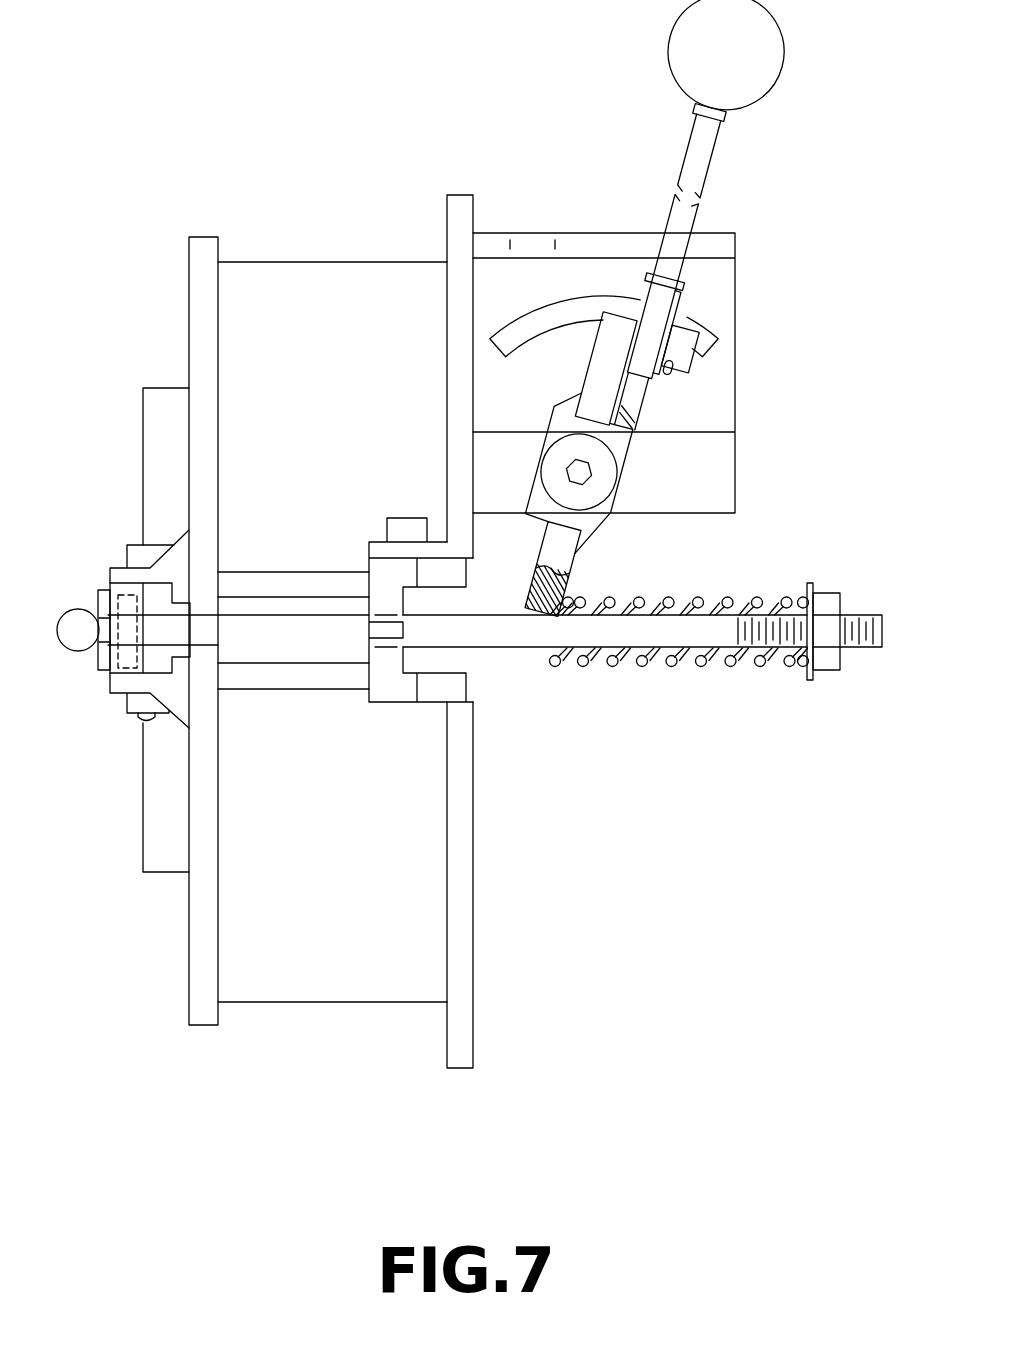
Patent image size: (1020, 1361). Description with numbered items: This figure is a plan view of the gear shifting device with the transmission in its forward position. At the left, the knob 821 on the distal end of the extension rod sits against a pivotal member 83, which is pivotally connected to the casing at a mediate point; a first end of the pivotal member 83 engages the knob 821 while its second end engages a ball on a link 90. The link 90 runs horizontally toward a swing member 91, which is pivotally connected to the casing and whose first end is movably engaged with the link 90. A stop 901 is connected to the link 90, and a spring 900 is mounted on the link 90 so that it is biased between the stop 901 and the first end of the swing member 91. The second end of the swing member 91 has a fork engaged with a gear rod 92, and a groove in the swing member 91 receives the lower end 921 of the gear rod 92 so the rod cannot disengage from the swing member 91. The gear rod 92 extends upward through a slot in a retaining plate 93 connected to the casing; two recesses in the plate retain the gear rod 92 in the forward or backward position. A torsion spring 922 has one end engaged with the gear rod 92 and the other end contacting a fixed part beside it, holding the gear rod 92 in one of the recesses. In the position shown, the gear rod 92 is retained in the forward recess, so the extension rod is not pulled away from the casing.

The gear rod 92 is at (707, 147).
The retaining plate 93 is at (728, 245).
The torsion spring 922 is at (688, 298).
The lower end 921 is at (635, 412).
The swing member 91 is at (598, 530).
The spring 900 is at (640, 600).
The stop 901 is at (826, 627).
The link 90 is at (695, 637).
The pivotal member 83 is at (100, 657).
The knob 821 is at (127, 653).